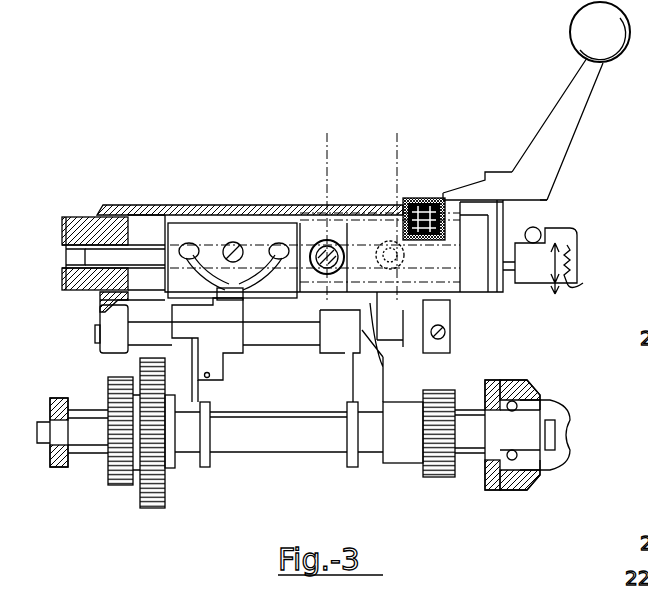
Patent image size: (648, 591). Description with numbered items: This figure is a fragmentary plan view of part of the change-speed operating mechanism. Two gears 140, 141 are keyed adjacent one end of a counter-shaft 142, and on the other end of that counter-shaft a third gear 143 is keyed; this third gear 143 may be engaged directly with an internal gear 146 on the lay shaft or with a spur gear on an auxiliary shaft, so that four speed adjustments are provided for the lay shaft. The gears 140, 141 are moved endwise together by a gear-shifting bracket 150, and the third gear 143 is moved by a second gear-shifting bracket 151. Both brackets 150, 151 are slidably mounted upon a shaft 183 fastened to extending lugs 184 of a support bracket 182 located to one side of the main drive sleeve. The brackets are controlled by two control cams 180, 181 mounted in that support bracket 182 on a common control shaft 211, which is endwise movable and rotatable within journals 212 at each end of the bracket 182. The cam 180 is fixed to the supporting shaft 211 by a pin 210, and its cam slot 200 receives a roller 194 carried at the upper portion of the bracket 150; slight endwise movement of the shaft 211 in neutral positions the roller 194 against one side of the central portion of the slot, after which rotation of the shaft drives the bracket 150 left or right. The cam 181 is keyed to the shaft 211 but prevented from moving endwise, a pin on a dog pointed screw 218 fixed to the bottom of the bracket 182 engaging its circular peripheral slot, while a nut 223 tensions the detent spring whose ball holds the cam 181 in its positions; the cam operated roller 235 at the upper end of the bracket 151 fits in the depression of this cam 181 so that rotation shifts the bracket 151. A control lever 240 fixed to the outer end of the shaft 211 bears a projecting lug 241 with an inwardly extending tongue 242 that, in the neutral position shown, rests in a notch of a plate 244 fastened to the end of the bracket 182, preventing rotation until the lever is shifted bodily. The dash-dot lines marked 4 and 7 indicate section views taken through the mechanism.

The section line 4- 4 is at (397, 133).
The section line 7- 7 is at (327, 133).
The gear 140 is at (115, 485).
The gear 141 is at (165, 495).
The counter-shaft 142 is at (287, 437).
The third gear 143 is at (440, 478).
The internal gear 146 is at (517, 398).
The gear-shifting bracket 150 is at (190, 382).
The gear-shifting bracket 151 is at (353, 368).
The control cam 180 is at (263, 203).
The control cam 181 is at (393, 250).
The support bracket 182 is at (110, 205).
The shaft 183 is at (287, 333).
The extending lugs 184 is at (115, 322).
The roller 194 is at (100, 303).
The cam slot 200 is at (252, 232).
The pin 210 is at (215, 244).
The supporting shaft 211 is at (143, 257).
The journals 212 is at (97, 247).
The dog pointed screw 218 is at (427, 198).
The nut 223 is at (339, 205).
The cam operated roller 235 is at (345, 357).
The control lever 240 is at (568, 108).
The projecting lug 241 is at (498, 173).
The tongue 242 is at (533, 197).
The plate 244 is at (493, 227).